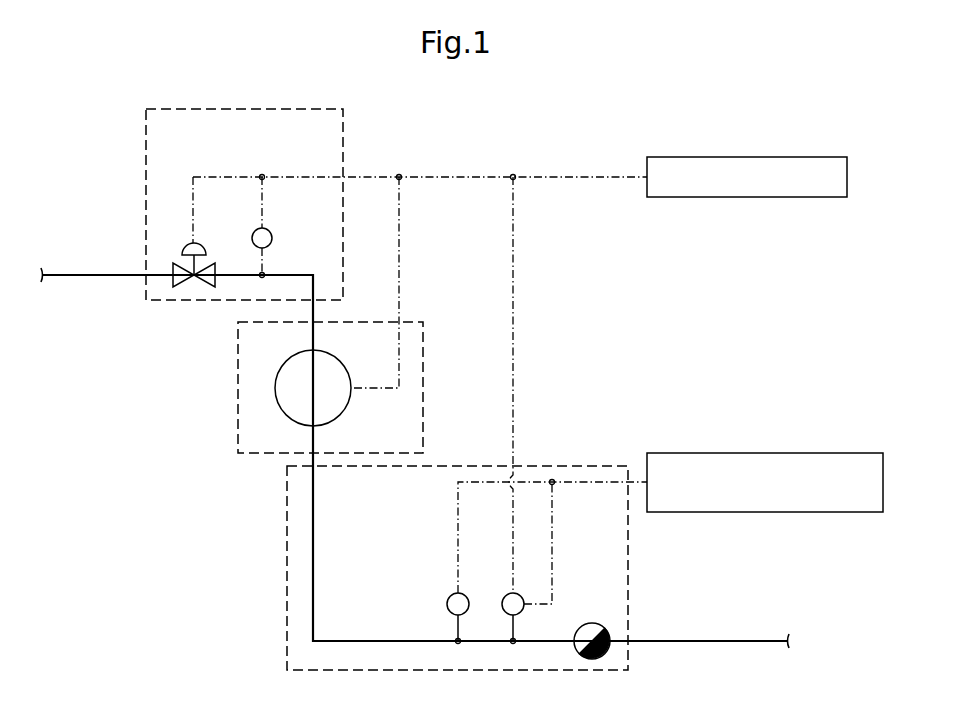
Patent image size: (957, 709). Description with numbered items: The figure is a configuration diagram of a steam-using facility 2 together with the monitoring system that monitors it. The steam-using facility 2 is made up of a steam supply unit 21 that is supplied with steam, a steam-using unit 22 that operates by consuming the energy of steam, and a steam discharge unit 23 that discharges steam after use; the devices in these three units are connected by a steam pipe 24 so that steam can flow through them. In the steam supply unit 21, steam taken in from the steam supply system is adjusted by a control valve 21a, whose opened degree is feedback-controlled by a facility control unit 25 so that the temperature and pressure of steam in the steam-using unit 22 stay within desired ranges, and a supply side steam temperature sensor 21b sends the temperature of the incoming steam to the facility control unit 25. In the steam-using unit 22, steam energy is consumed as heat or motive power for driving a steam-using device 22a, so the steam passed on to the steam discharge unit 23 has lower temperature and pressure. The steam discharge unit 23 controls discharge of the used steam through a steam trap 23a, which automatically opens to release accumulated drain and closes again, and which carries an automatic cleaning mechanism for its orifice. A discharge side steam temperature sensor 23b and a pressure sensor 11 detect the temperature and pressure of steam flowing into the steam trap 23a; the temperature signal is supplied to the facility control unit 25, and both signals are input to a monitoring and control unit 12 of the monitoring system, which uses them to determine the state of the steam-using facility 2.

The steam-using facility 2 is at (678, 83).
The pressure sensor 11 is at (448, 606).
The monitoring and control unit 12 is at (765, 453).
The steam supply unit 21 is at (146, 122).
The control valve 21a is at (207, 247).
The supply side steam temperature sensor 21b is at (273, 240).
The steam-using unit 22 is at (238, 413).
The steam-using device 22a is at (286, 366).
The steam discharge unit 23 is at (287, 562).
The steam trap 23a is at (590, 623).
The discharge side steam temperature sensor 23b is at (506, 594).
The steam pipe 24 is at (73, 277).
The facility control unit 25 is at (768, 157).